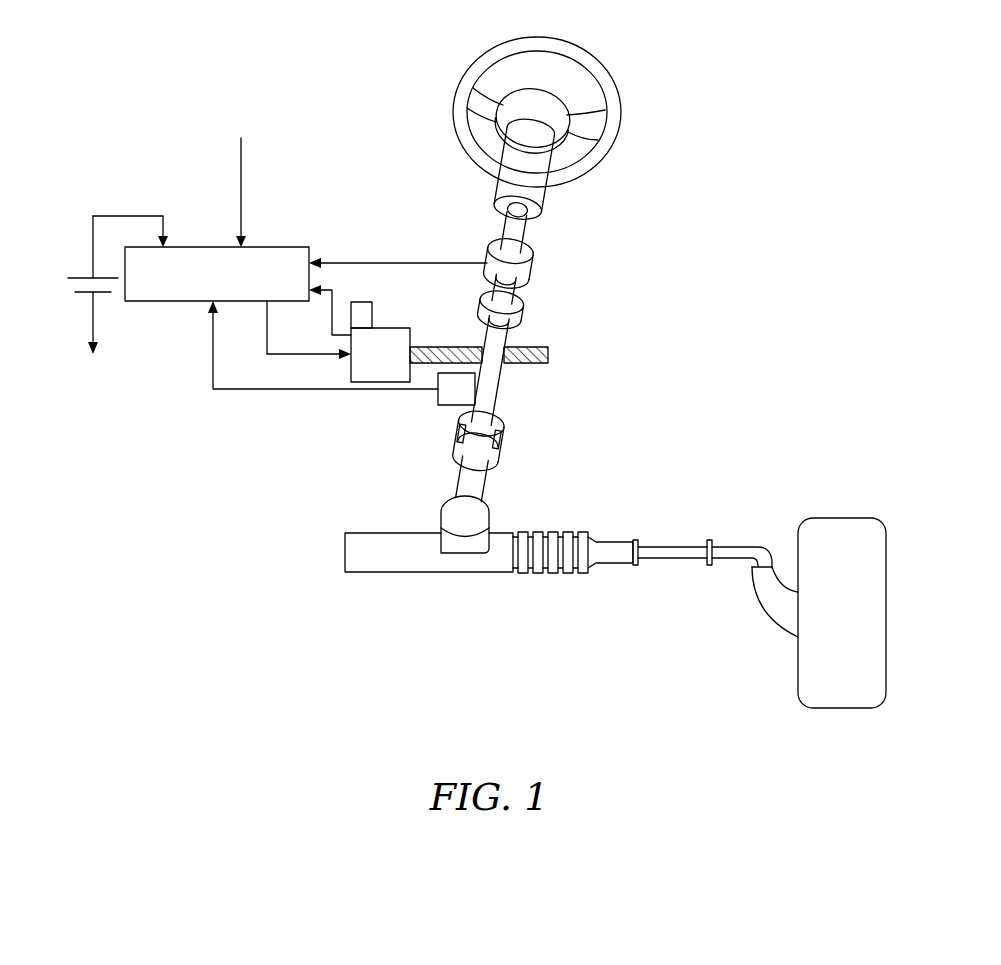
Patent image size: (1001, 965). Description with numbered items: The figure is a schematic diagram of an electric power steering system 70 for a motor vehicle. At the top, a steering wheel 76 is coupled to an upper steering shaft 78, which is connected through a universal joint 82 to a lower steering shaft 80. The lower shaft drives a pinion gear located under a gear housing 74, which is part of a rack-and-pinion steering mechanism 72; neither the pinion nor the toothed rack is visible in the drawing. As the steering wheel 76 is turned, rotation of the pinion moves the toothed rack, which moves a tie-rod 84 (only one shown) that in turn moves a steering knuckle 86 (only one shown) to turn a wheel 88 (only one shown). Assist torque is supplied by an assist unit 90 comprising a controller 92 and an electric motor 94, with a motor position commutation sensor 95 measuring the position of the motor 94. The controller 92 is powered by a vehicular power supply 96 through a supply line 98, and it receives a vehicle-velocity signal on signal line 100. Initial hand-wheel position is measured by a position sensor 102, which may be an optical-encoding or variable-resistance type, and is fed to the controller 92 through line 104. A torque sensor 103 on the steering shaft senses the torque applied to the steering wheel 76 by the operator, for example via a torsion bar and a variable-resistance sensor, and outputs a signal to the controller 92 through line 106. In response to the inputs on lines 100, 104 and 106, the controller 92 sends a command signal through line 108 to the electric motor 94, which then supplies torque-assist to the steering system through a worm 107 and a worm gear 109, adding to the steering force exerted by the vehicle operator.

The electric power steering system 70 is at (763, 80).
The steering mechanism 72 is at (540, 582).
The gear housing 74 is at (451, 514).
The steering wheel 76 is at (597, 69).
The upper steering shaft 78 is at (531, 224).
The lower steering shaft 80 is at (474, 496).
The universal joint 82 is at (501, 448).
The tie-rod 84 is at (655, 554).
The steering knuckle 86 is at (778, 621).
The wheel 88 is at (848, 524).
The assist unit 90 is at (347, 152).
The controller 92 is at (178, 252).
The electric motor 94 is at (408, 331).
The motor position commutation sensor 95 is at (375, 310).
The vehicular power supply 96 is at (80, 278).
The supply line 98 is at (115, 215).
The signal line 100 is at (241, 170).
The position sensor 102 is at (436, 402).
The torque sensor 103 is at (529, 259).
The line 104 is at (255, 392).
The line 106 is at (386, 262).
The worm 107 is at (549, 357).
The line 108 is at (300, 355).
The worm gear 109 is at (518, 327).